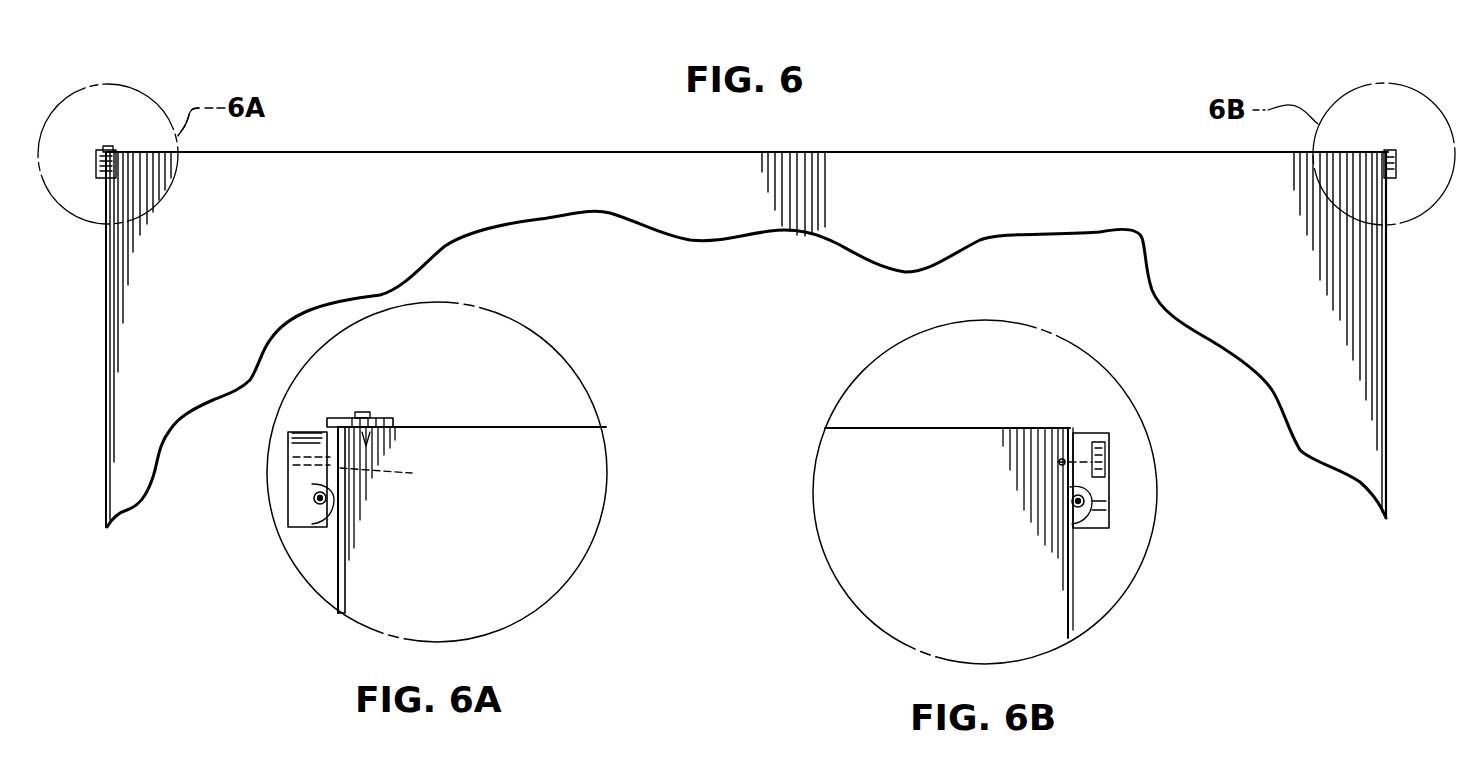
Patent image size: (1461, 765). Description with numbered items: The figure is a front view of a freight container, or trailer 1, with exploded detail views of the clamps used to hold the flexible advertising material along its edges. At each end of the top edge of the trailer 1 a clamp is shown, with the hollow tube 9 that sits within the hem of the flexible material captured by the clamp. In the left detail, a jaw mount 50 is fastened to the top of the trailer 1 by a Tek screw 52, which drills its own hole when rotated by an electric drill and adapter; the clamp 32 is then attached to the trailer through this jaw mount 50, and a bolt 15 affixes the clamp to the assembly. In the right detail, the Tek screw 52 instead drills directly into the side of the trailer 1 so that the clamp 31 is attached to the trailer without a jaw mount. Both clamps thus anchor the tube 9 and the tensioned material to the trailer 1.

In FIG. 6, the trailer 1 is at (472, 152).
In FIG. 6A, the trailer 1 is at (497, 427).
In FIG. 6B, the trailer 1 is at (983, 428).
In FIG. 6A, the hollow tube 9 is at (328, 499).
In FIG. 6B, the hollow tube 9 is at (1072, 502).
In FIG. 6A, the bolt 15 is at (370, 473).
In FIG. 6B, the clamp 31 is at (1100, 527).
In FIG. 6A, the clamp 32 is at (305, 527).
In FIG. 6A, the jaw mount 50 is at (341, 418).
In FIG. 6A, the Tek screw 52 is at (368, 412).
In FIG. 6B, the Tek screw 52 is at (1088, 440).